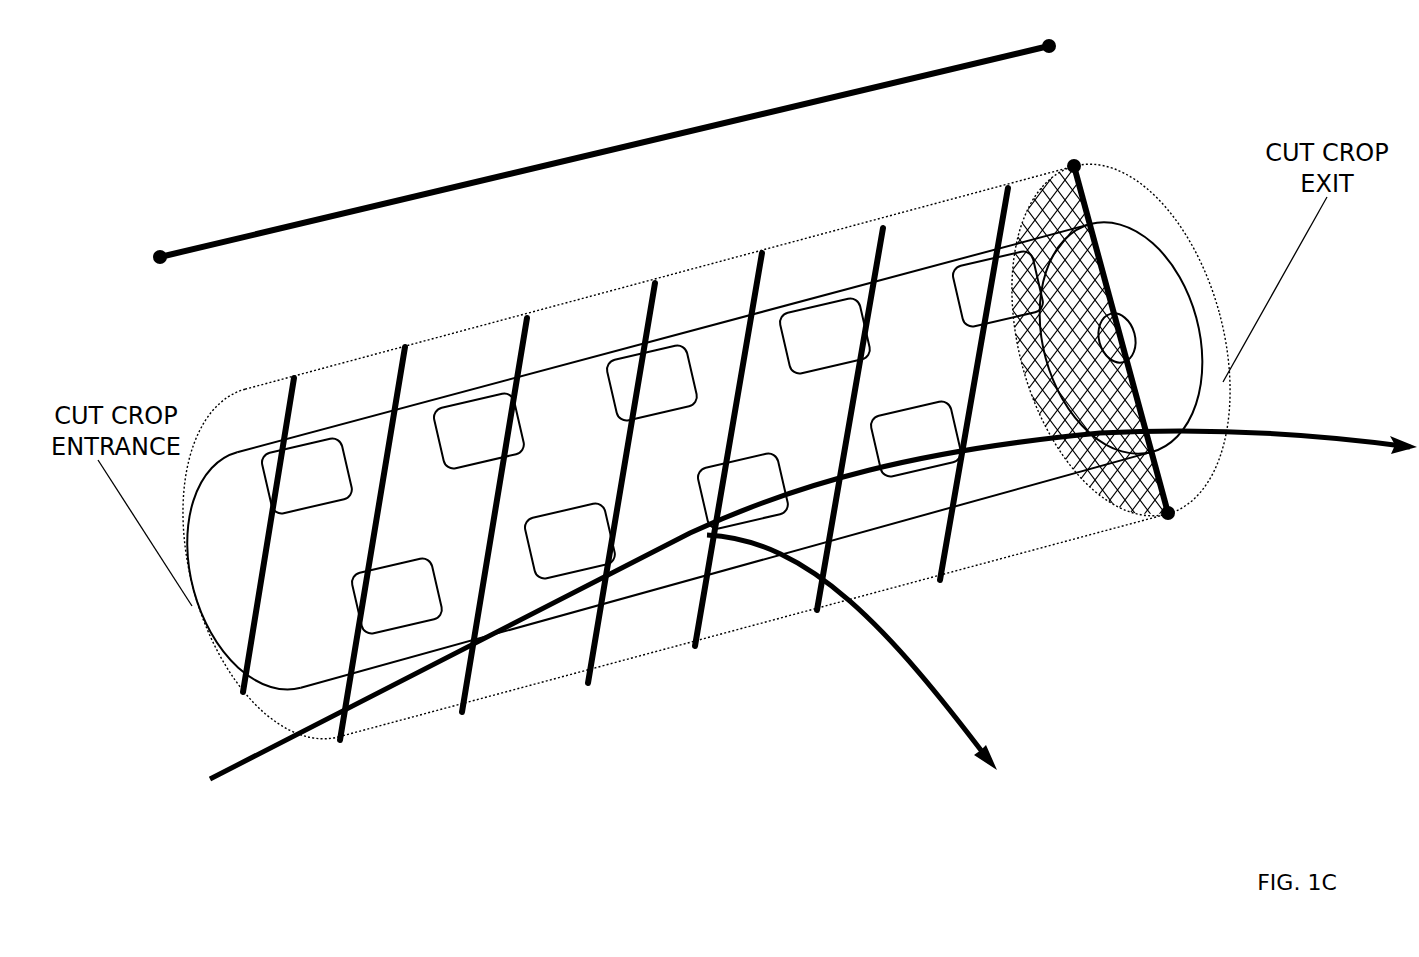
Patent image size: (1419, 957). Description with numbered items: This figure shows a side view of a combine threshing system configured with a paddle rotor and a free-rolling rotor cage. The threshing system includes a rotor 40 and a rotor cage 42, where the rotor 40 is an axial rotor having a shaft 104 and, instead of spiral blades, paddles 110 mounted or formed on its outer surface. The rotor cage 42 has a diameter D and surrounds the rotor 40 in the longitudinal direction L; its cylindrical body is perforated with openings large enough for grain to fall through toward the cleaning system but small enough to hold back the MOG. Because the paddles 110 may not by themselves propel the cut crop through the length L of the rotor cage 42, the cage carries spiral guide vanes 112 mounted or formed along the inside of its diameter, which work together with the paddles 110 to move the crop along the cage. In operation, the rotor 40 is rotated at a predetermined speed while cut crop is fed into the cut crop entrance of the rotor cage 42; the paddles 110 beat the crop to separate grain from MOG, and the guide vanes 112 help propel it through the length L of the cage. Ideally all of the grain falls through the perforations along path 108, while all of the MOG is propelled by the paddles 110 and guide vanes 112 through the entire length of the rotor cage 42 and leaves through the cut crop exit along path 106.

The rotor 40 is at (797, 300).
The rotor cage 42 is at (705, 287).
The shaft 104 is at (1135, 344).
The path 106 is at (1382, 449).
The path 108 is at (945, 705).
The paddles 110 is at (332, 468).
The spiral guide vanes 112 is at (528, 320).
The longitudinal direction L is at (668, 134).
The diameter D is at (1097, 245).